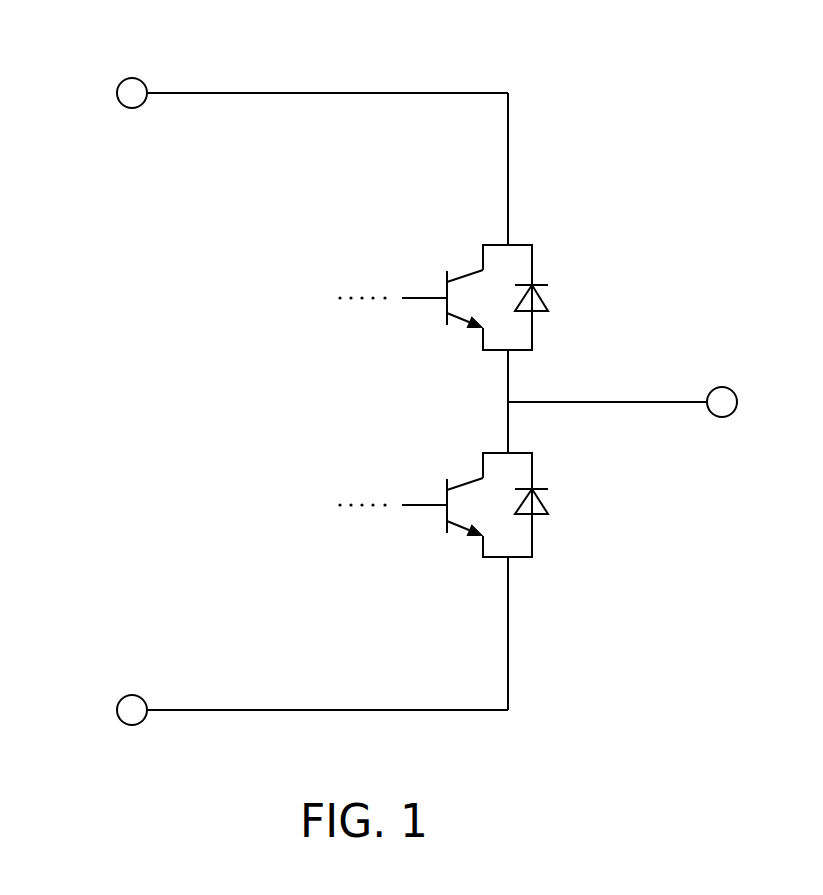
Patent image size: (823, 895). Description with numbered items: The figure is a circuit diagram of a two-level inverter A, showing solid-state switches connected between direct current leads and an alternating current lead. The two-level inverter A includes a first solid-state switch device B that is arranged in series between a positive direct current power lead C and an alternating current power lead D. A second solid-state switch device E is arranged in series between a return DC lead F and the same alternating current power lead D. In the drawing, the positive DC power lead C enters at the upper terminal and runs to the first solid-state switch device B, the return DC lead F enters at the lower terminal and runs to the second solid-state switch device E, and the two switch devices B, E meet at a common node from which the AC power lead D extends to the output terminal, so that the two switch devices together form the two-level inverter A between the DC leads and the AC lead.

The two-level inverter A is at (95, 757).
The first solid-state switch device B is at (566, 238).
The positive direct current (DC) power lead C is at (294, 93).
The alternating current (AC) power lead D is at (628, 402).
The second solid-state switch device E is at (560, 582).
The return DC lead F is at (286, 710).